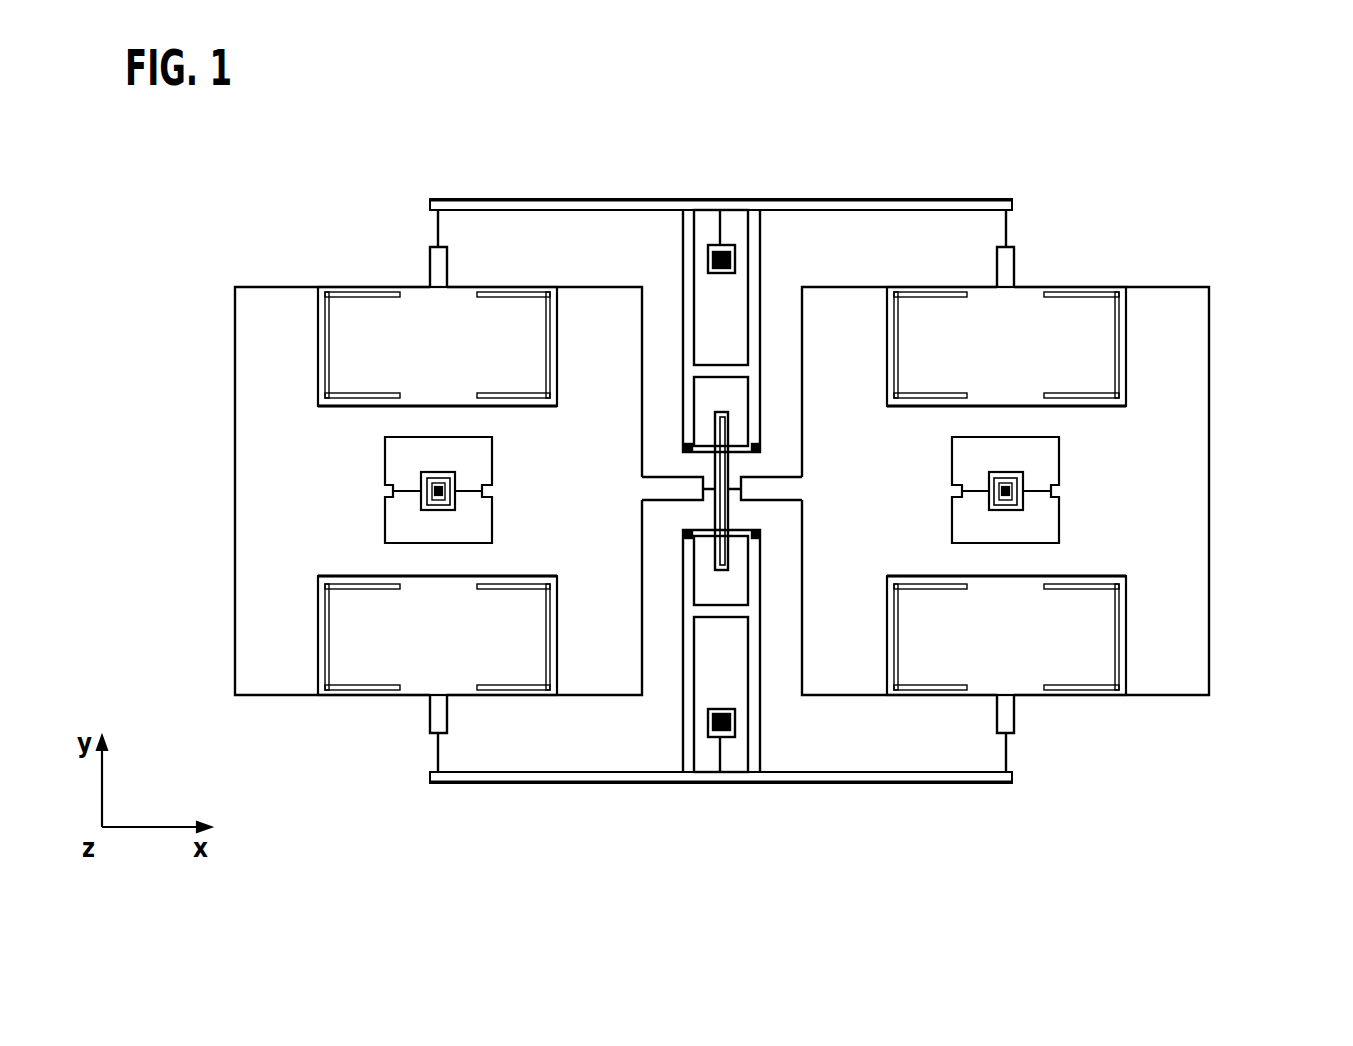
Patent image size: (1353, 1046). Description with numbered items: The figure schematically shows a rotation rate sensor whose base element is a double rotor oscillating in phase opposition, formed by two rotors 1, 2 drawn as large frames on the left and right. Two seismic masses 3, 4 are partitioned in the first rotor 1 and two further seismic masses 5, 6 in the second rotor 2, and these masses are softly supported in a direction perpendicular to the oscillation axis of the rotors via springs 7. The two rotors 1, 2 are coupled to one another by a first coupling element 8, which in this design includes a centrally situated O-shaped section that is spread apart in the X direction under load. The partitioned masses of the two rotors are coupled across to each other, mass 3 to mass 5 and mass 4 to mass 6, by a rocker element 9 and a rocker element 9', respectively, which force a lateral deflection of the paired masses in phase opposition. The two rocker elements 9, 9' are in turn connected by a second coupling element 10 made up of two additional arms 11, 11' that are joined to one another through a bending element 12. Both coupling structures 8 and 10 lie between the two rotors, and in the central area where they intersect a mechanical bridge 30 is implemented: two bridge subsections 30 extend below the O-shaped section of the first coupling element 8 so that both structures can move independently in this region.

The rotor 1 is at (215, 428).
The rotor 2 is at (1229, 428).
The seismic mass 3 is at (363, 317).
The seismic mass 4 is at (413, 667).
The seismic mass 5 is at (1070, 320).
The seismic mass 6 is at (1061, 667).
The springs 7 is at (358, 688).
The first coupling element 8 is at (730, 423).
The rocker element 9 is at (721, 153).
The rocker element 9' is at (721, 823).
The second coupling element 10 is at (689, 486).
The arm 11 is at (796, 274).
The arm 11' is at (784, 702).
The bending element 12 is at (717, 467).
The mechanical bridge 30 is at (708, 448).